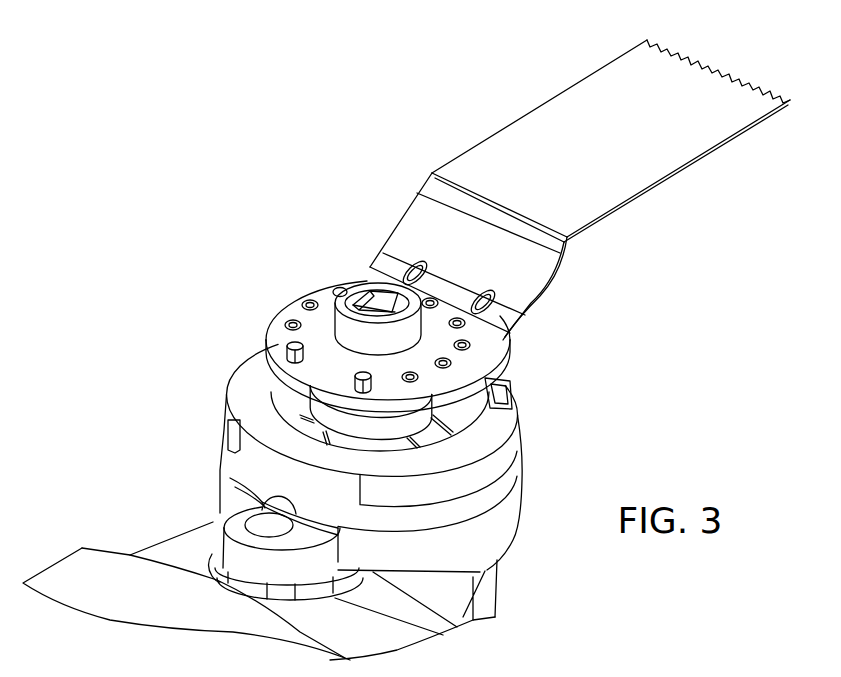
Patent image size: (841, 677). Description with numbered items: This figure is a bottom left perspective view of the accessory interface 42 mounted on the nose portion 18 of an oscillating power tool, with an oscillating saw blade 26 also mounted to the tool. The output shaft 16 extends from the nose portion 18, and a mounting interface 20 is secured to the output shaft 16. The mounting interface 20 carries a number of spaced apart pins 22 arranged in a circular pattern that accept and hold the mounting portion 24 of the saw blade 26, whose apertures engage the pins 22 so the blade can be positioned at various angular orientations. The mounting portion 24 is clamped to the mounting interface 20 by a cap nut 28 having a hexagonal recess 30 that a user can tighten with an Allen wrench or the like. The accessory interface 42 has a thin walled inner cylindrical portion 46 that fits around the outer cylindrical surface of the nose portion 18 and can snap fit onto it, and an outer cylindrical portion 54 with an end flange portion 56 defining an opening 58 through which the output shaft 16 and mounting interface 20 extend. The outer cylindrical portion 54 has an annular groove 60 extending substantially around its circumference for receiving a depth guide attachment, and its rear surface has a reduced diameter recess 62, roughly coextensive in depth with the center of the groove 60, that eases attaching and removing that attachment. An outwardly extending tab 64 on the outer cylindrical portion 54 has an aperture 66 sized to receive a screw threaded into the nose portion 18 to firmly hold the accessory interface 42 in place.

The output shaft 16 is at (473, 460).
The nose portion 18 is at (160, 541).
The mounting interface 20 is at (495, 419).
The pins 22 is at (289, 321).
The mounting portion 24 is at (323, 292).
The saw blade 26 is at (558, 278).
The cap nut 28 is at (345, 290).
The hexagonal recess 30 is at (380, 296).
The accessory interface 42 is at (173, 354).
The inner cylindrical portion 46 is at (493, 537).
The outer cylindrical portion 54 is at (227, 420).
The end flange portion 56 is at (260, 367).
The opening 58 is at (282, 392).
The annular groove 60 is at (493, 488).
The reduced diameter recess 62 is at (233, 478).
The tab 64 is at (243, 557).
The aperture 66 is at (254, 522).